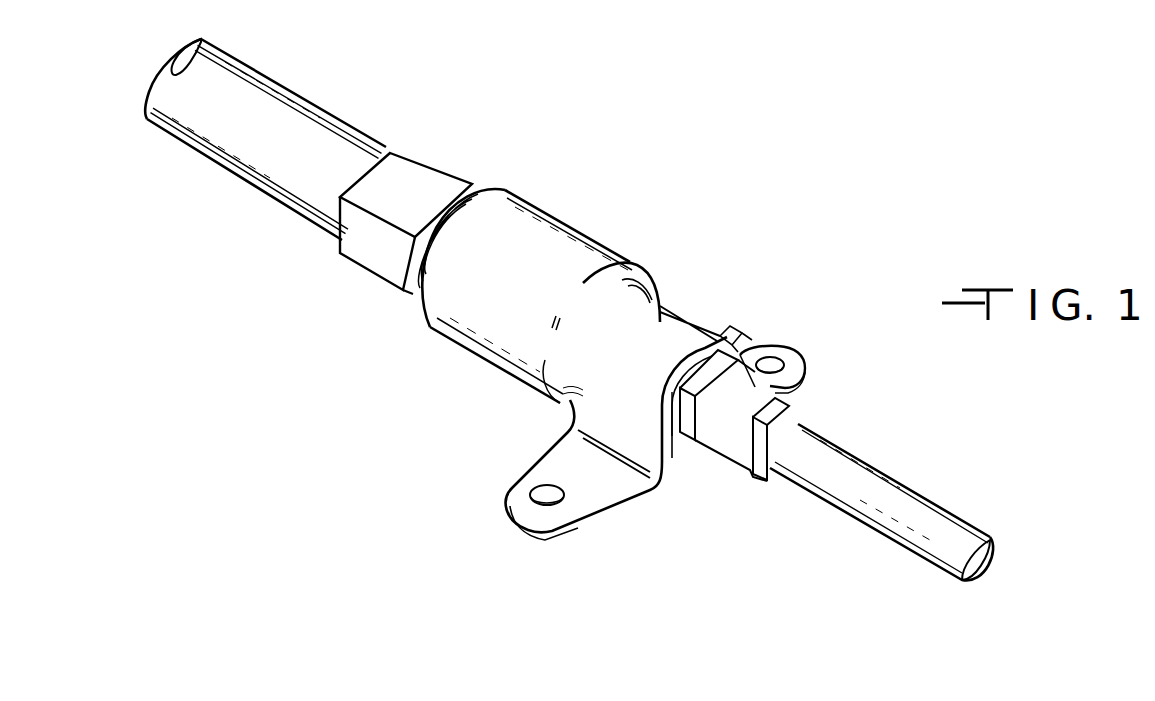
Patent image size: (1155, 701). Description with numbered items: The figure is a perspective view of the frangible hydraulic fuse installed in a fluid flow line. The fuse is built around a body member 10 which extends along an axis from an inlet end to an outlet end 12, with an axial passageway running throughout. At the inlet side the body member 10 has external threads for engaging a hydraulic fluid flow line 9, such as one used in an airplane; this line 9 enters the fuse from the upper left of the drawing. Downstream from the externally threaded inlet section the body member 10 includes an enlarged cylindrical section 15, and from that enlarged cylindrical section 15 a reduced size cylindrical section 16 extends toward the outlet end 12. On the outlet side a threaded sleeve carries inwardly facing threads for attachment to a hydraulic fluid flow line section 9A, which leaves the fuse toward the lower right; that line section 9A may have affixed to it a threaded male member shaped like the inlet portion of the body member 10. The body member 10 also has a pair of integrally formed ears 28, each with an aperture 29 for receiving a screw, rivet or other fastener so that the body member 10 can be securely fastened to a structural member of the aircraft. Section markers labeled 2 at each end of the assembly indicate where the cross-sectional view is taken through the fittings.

The section line / compression nut 2 is at (428, 195).
The hydraulic fluid flow line 9 is at (248, 163).
The hydraulic fluid flow line section 9A is at (923, 515).
The body member 10 is at (565, 320).
The outlet end 12 is at (700, 333).
The enlarged cylindrical section 15 is at (527, 287).
The reduced size cylindrical section 16 is at (641, 377).
The ears 28 is at (800, 362).
The aperture 29 is at (778, 357).